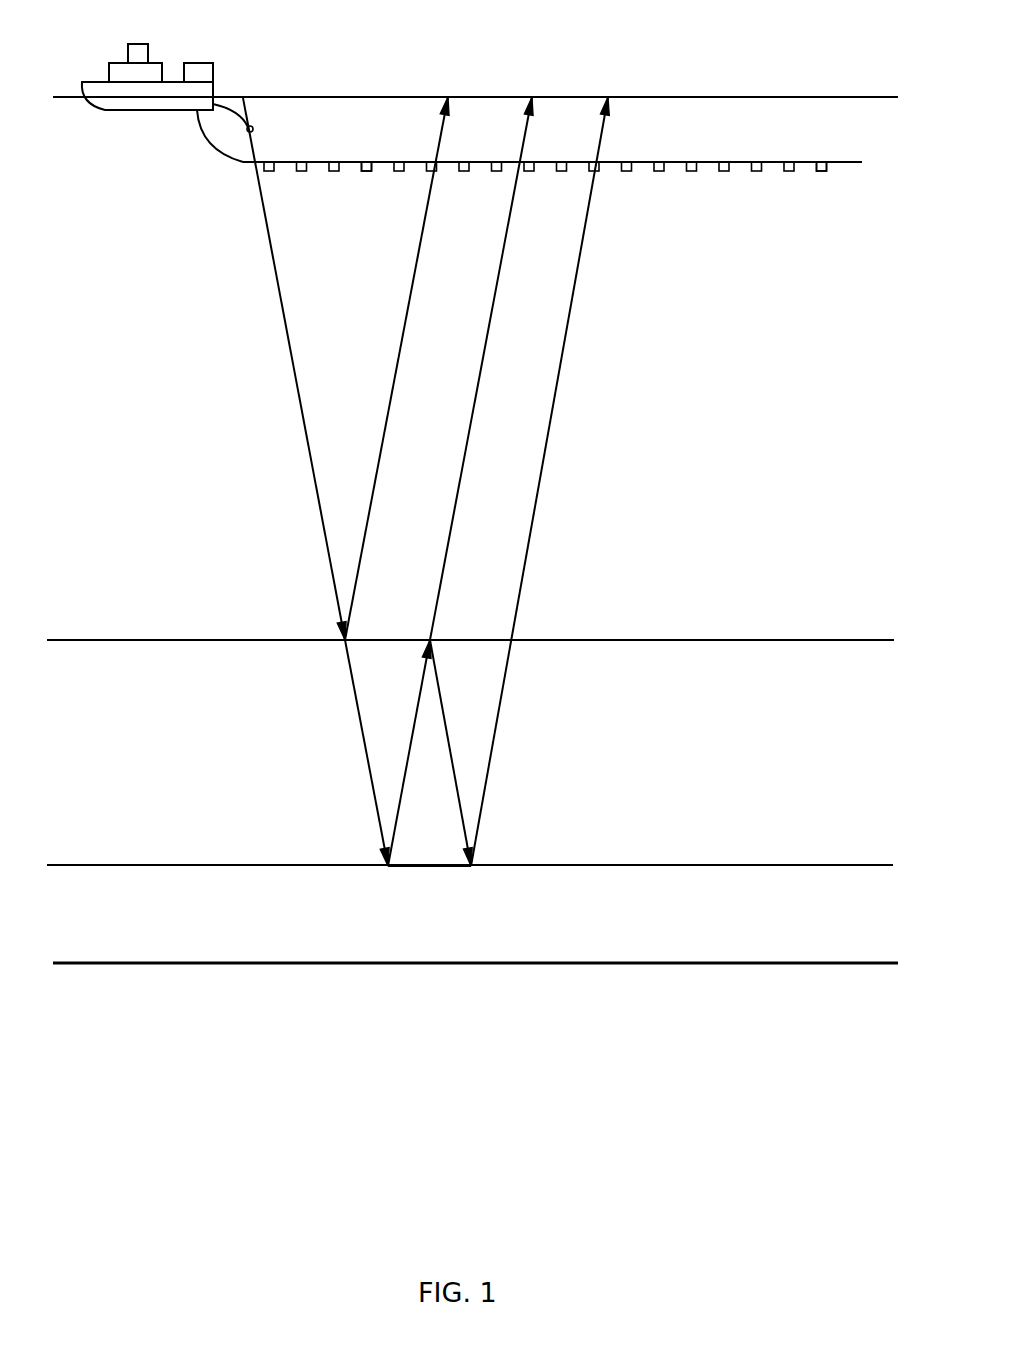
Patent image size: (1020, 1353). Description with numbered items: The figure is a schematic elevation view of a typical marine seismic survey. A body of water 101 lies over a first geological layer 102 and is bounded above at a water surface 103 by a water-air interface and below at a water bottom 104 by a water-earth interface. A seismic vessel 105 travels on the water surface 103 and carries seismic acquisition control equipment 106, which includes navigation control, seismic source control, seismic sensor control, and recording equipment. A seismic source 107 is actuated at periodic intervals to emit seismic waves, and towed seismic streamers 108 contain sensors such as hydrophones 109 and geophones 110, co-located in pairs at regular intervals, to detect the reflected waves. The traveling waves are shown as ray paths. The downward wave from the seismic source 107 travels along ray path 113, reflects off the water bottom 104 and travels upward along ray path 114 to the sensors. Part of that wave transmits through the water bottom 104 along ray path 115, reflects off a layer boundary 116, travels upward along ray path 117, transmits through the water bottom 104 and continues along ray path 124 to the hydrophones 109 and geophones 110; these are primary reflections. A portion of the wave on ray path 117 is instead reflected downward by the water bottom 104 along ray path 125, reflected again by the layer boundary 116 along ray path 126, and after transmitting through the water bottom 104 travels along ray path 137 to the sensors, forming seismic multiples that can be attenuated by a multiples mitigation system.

The body of water 101 is at (163, 400).
The first geological layer 102 is at (168, 722).
The water surface 103 is at (576, 96).
The water bottom 104 is at (148, 639).
The seismic vessel 105 is at (140, 43).
The seismic acquisition control equipment 106 is at (208, 62).
The seismic source 107 is at (243, 160).
The seismic streamers 108 is at (660, 161).
The hydrophones 109 is at (335, 161).
The geophones 110 is at (368, 161).
The ray path 113 is at (316, 480).
The ray path 114 is at (377, 487).
The ray path 115 is at (358, 708).
The layer boundary 116 is at (148, 864).
The ray path 117 is at (393, 828).
The ray path 124 is at (462, 488).
The ray path 125 is at (440, 683).
The ray path 126 is at (488, 772).
The ray path 137 is at (528, 555).